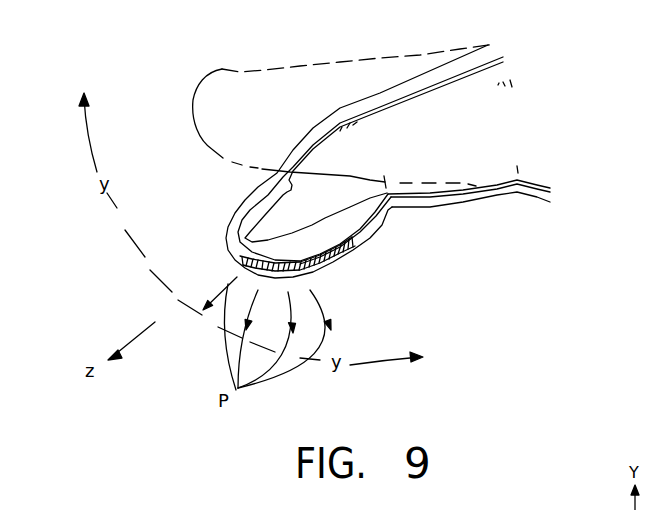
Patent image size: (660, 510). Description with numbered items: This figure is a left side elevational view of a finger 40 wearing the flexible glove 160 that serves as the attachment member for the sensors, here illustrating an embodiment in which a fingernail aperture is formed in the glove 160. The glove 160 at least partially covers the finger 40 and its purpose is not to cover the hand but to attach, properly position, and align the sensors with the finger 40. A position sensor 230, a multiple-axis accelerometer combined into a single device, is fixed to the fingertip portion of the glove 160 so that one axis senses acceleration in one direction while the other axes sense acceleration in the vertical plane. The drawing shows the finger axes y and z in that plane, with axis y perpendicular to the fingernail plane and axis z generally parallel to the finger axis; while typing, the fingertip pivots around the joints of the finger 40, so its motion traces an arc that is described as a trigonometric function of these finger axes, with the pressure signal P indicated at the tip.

The finger 40 is at (378, 223).
The glove 160 is at (358, 240).
The position sensor 230 is at (325, 268).